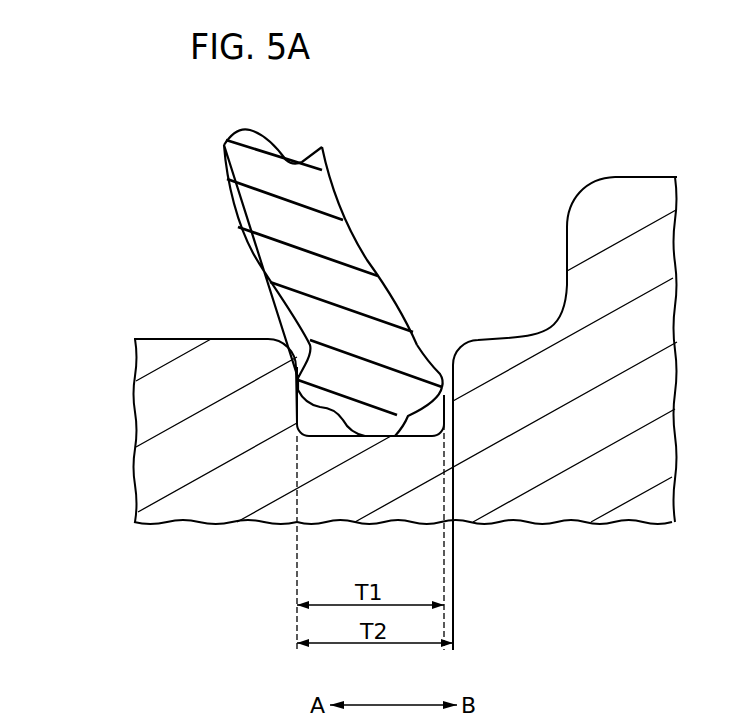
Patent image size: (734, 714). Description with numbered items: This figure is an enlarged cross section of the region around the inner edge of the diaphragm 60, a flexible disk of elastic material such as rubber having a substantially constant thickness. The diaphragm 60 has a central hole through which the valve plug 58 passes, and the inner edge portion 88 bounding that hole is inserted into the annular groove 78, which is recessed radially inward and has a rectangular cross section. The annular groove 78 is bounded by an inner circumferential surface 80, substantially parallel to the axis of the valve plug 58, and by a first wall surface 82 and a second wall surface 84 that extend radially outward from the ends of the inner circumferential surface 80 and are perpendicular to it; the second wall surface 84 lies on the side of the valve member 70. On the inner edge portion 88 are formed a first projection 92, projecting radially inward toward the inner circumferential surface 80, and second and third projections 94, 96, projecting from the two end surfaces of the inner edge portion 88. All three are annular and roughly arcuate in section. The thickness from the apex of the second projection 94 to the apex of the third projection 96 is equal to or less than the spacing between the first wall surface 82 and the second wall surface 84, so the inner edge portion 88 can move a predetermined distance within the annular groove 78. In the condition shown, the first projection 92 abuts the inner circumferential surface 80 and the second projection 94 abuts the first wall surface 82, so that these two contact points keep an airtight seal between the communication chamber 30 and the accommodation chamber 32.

The communication chamber 30 is at (517, 303).
The accommodation chamber 32 is at (218, 314).
The valve plug 58 is at (173, 347).
The diaphragm 60 is at (344, 302).
The valve member 70 is at (643, 188).
The annular groove 78 is at (323, 432).
The inner circumferential surface 80 is at (381, 433).
The first wall surface 82 is at (301, 388).
The second wall surface 84 is at (405, 428).
The inner edge portion 88 is at (387, 300).
The first projection 92 is at (367, 428).
The second projection 94 is at (302, 401).
The third projection 96 is at (433, 372).